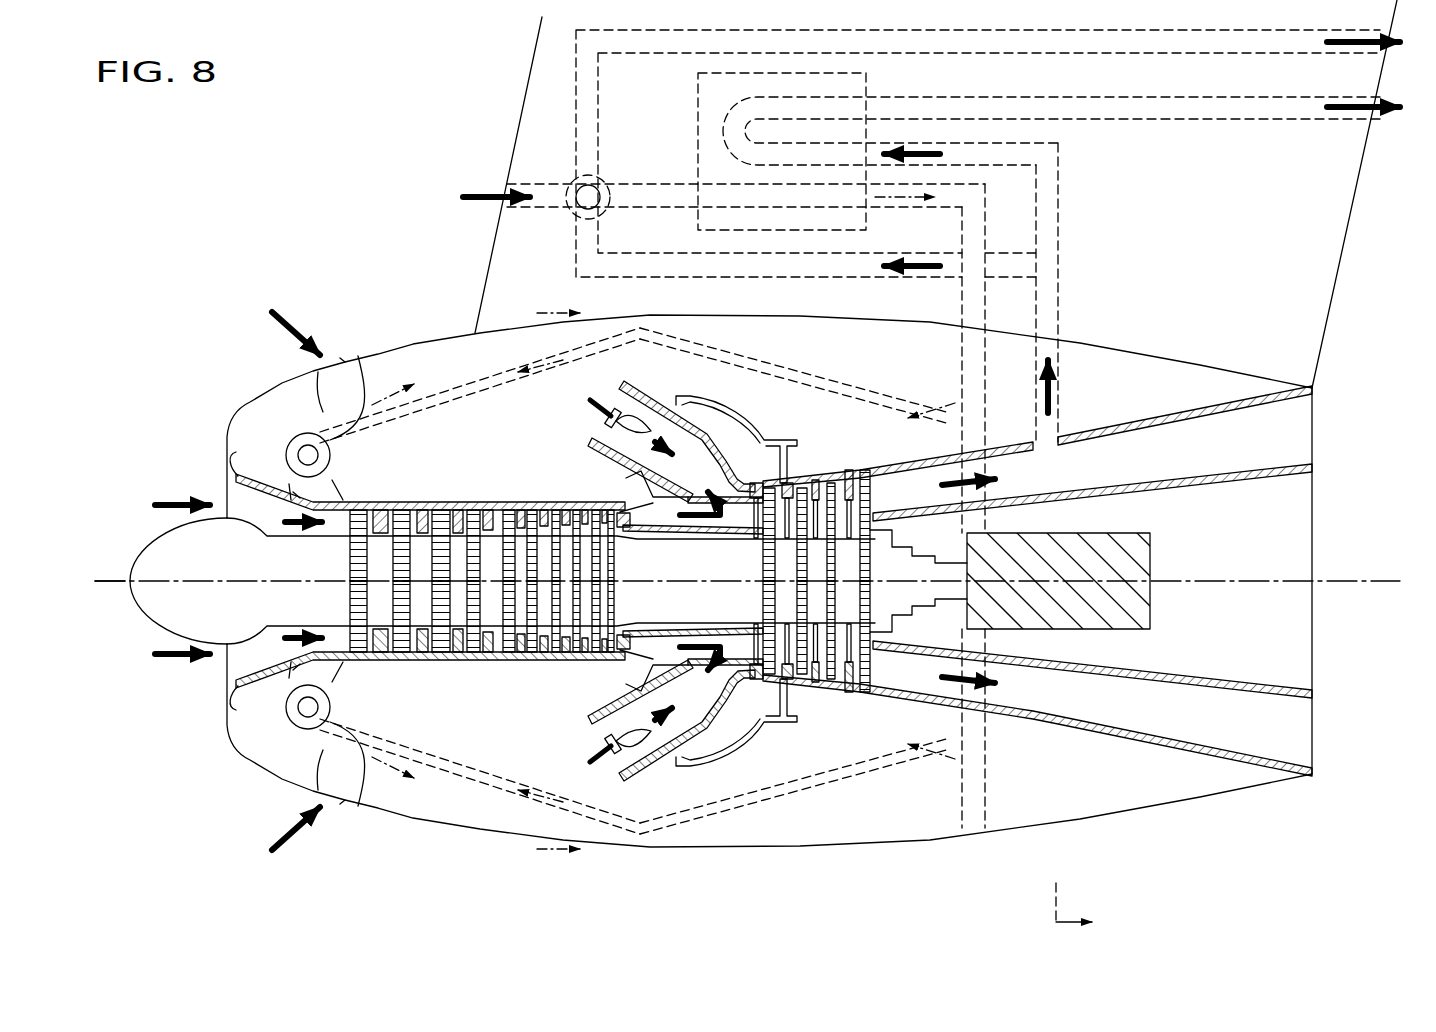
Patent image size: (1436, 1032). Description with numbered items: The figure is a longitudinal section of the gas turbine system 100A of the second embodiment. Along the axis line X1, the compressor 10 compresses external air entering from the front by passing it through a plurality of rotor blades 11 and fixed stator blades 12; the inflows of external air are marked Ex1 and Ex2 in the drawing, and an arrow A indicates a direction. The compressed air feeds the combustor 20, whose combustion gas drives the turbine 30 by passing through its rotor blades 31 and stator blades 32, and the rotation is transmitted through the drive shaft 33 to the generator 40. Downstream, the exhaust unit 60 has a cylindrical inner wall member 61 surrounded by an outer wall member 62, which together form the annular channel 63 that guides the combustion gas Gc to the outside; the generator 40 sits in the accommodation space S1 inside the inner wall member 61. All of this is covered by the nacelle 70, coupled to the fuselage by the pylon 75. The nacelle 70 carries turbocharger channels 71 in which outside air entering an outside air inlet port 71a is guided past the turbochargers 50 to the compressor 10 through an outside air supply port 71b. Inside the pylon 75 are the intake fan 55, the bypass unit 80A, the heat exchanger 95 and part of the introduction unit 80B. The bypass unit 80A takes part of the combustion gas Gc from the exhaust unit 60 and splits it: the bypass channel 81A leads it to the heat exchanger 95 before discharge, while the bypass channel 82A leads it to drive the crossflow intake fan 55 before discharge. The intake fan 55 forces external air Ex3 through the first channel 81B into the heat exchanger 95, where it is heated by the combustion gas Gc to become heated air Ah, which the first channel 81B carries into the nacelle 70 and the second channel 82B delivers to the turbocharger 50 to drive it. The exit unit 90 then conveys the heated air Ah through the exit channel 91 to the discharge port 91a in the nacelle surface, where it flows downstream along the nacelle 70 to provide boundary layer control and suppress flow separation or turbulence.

The gas turbine system 100A is at (337, 243).
The compressor 10 is at (430, 580).
The rotor blades 11 is at (405, 652).
The stator blades 12 is at (450, 652).
The combustor 20 is at (592, 444).
The turbine 30 is at (821, 622).
The rotor blades 31 is at (797, 668).
The stator blades 32 is at (812, 675).
The drive shaft 33 is at (876, 675).
The generator 40 is at (1120, 645).
The turbocharger 50 is at (285, 428).
The intake fan 55 is at (579, 180).
The exhaust unit 60 is at (1224, 668).
The inner wall member 61 is at (1240, 500).
The outer wall member 62 is at (1032, 726).
The annular channel 63 is at (1185, 415).
The nacelle 70 is at (1102, 340).
The turbocharger channel 71 is at (320, 405).
The outside air inlet port 71a is at (339, 356).
The outside air supply port 71b is at (291, 486).
The pylon 75 is at (1340, 318).
The bypass unit 80A is at (1068, 210).
The introduction unit 80B is at (762, 347).
The bypass channel 81A is at (1006, 172).
The first channel 81B is at (972, 183).
The bypass channel 82A is at (1010, 329).
The second channel 82B is at (832, 400).
The exit unit 90 is at (425, 356).
The exit channel 91 is at (465, 345).
The discharge port 91a is at (517, 326).
The heat exchanger 95 is at (697, 130).
The intake air Ex1 is at (150, 505).
The external air Ex2 is at (272, 316).
The external air Ex3 is at (482, 195).
The combustion gas Gc is at (912, 150).
The heated air Ah is at (560, 209).
The axis line X1 is at (108, 588).
The accommodation space S1 is at (1291, 648).
The section arrow A is at (1060, 917).